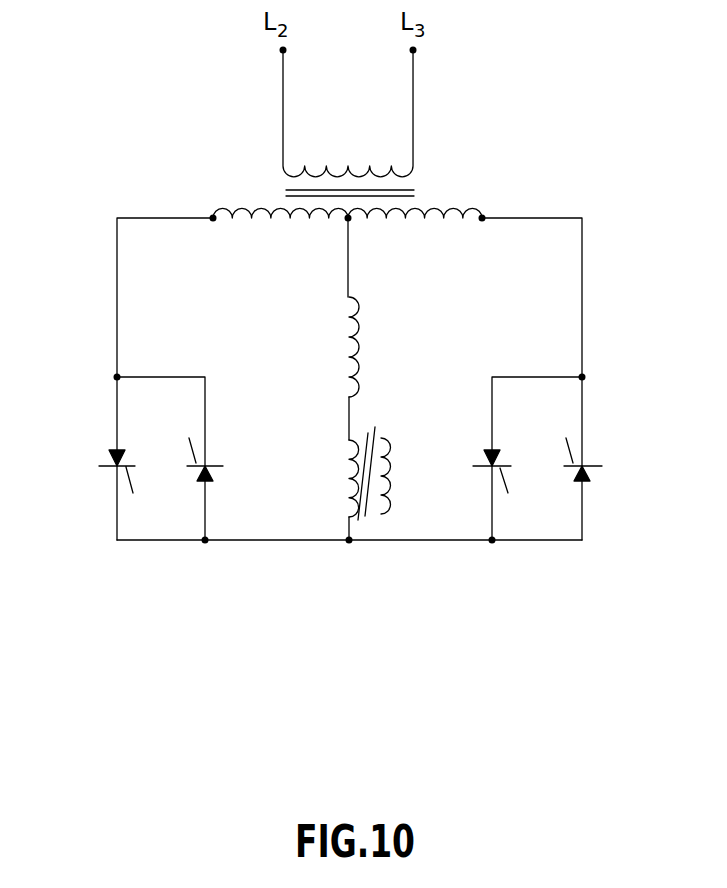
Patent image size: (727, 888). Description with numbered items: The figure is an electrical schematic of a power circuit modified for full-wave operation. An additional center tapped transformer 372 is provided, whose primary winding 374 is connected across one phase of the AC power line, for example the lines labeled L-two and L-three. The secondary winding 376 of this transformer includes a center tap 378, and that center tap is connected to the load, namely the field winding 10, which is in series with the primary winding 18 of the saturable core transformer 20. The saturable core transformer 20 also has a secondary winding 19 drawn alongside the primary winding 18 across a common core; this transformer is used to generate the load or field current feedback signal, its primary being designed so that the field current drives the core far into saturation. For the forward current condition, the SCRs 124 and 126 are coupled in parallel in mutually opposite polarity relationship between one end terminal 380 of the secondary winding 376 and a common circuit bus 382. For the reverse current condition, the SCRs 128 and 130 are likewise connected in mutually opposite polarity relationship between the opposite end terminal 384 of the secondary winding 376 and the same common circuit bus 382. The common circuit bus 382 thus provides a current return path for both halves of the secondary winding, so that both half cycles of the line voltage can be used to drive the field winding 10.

The field winding 10 is at (366, 322).
The primary winding 18 is at (346, 453).
The secondary winding 19 is at (398, 451).
The saturable core transformer 20 is at (375, 418).
The SCR 124 is at (96, 466).
The SCR 126 is at (222, 476).
The SCR 128 is at (596, 456).
The SCR 130 is at (502, 450).
The center tapped transformer 372 is at (440, 175).
The primary winding 374 is at (357, 163).
The secondary winding 376 is at (263, 225).
The center tap 378 is at (353, 225).
The end terminal 380 is at (212, 215).
The common circuit bus 382 is at (292, 546).
The end terminal 384 is at (485, 225).